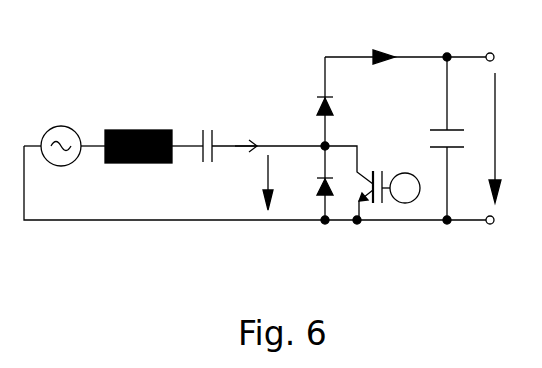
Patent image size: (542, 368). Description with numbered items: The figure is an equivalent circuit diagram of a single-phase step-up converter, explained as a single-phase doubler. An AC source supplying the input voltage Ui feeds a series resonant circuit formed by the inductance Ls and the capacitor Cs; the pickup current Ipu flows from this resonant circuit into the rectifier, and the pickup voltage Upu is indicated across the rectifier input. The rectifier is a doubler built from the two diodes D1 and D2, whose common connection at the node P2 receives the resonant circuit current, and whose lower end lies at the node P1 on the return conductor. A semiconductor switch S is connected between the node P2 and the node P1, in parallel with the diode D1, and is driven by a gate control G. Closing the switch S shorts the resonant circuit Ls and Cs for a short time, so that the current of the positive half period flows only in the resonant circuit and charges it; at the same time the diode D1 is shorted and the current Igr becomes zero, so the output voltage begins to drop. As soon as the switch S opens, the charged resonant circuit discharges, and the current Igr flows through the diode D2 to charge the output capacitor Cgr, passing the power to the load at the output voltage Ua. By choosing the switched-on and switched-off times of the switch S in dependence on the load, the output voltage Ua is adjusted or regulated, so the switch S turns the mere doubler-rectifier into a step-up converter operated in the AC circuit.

The input voltage Ui is at (82, 115).
The resonant circuit inductance Ls is at (138, 131).
The resonant circuit capacitor Cs is at (198, 131).
The pickup current Ipu is at (246, 137).
The pickup voltage Upu is at (246, 182).
The diode D1 is at (308, 196).
The second diode D2 is at (308, 115).
The current Igr is at (380, 44).
The output capacitor Cgr is at (424, 138).
The output voltage Ua is at (508, 138).
The semiconductor switch S is at (378, 197).
The gate driver G is at (405, 188).
The first node P1 is at (327, 223).
The second node P2 is at (329, 146).